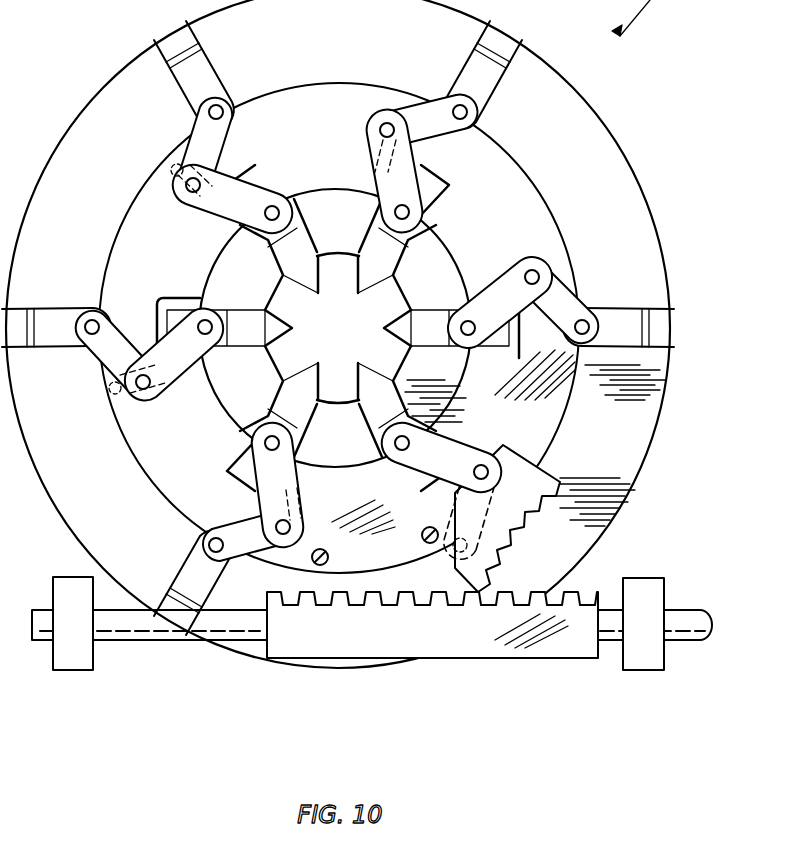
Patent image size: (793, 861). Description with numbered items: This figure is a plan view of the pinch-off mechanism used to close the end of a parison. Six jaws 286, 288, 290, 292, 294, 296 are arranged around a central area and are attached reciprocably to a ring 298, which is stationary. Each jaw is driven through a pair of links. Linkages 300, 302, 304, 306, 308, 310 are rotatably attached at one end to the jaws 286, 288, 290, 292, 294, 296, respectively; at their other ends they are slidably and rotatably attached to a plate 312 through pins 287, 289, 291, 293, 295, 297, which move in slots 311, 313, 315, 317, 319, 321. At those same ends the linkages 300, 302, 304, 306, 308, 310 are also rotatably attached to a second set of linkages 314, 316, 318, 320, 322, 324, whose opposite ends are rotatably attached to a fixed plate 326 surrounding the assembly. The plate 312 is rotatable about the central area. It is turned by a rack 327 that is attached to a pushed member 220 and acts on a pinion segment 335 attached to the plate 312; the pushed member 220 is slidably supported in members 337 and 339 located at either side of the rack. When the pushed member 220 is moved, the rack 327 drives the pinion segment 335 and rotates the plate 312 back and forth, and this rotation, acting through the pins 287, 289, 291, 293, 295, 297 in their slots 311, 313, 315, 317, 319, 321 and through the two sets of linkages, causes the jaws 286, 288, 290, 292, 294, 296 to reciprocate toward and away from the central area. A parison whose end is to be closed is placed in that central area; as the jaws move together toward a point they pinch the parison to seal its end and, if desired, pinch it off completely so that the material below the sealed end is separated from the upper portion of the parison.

The pushed member 220 is at (160, 640).
The jaw 286 is at (320, 262).
The pin 287 is at (192, 202).
The jaw 288 is at (408, 274).
The pin 289 is at (376, 128).
The jaw 290 is at (413, 362).
The pin 291 is at (526, 266).
The jaw 292 is at (338, 401).
The pin 293 is at (465, 470).
The jaw 294 is at (328, 378).
The pin 295 is at (308, 520).
The jaw 296 is at (296, 318).
The pin 297 is at (143, 400).
The ring 298 is at (218, 287).
The linkage 300 is at (221, 212).
The linkage 302 is at (374, 176).
The linkage 304 is at (471, 320).
The linkage 306 is at (458, 432).
The linkage 308 is at (312, 462).
The linkage 310 is at (166, 357).
The slot 311 is at (174, 170).
The plate 312 is at (466, 207).
The slot 313 is at (392, 108).
The linkage 314 is at (197, 120).
The slot 315 is at (566, 258).
The linkage 316 is at (438, 102).
The slot 317 is at (483, 446).
The linkage 318 is at (594, 293).
The slot 319 is at (278, 560).
The linkage 320 is at (503, 550).
The slot 321 is at (110, 396).
The linkage 322 is at (230, 525).
The linkage 324 is at (94, 368).
The fixed plate 326 is at (541, 160).
The rack 327 is at (411, 639).
The pinion segment 335 is at (361, 562).
The member 337 is at (625, 609).
The member 339 is at (54, 606).